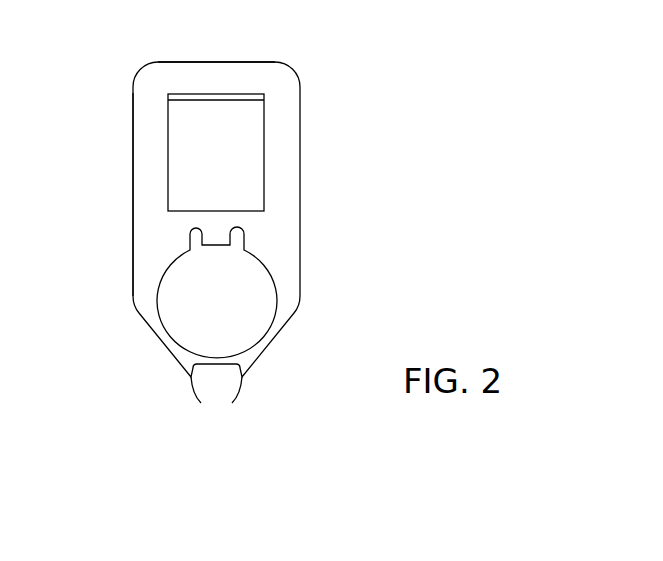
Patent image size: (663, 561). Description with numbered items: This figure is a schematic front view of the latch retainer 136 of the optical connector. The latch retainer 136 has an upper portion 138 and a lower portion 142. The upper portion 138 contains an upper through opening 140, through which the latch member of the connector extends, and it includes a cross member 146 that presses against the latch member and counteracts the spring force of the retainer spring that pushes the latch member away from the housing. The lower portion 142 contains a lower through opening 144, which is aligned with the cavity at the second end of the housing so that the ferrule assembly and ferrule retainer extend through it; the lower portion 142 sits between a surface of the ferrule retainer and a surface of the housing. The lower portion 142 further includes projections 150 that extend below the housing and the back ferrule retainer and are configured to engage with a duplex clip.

The latch retainer 136 is at (352, 104).
The upper portion 138 is at (133, 93).
The upper through opening 140 is at (232, 155).
The lower portion 142 is at (133, 285).
The lower through opening 144 is at (232, 305).
The cross member 146 is at (213, 62).
The projections 150 is at (216, 402).